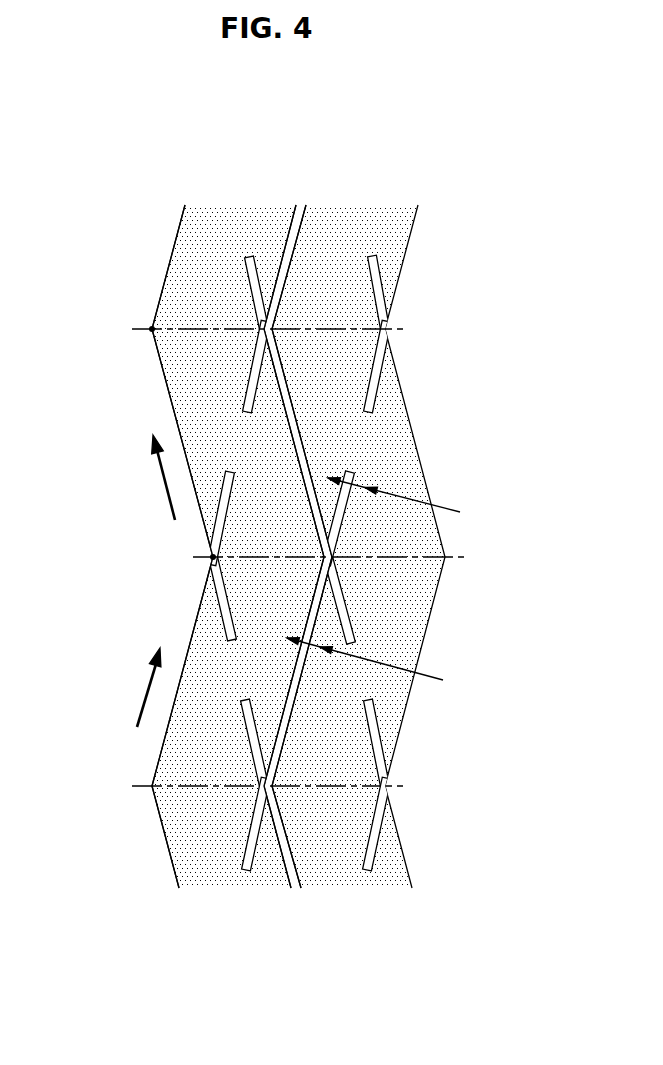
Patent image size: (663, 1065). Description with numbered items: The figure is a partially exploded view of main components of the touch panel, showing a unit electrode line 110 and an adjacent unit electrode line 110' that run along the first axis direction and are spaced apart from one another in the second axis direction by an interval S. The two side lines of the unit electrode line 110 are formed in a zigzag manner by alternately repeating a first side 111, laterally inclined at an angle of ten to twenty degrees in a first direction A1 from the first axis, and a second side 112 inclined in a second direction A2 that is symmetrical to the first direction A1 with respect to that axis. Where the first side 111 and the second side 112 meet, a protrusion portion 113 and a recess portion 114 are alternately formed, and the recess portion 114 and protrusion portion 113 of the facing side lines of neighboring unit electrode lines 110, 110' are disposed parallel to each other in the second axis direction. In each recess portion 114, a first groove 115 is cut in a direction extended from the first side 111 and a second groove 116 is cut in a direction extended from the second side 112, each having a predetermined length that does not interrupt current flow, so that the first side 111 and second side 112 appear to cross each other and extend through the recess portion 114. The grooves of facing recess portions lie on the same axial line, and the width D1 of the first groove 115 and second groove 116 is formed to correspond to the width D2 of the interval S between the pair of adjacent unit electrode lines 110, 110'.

The unit electrode line 110 is at (268, 510).
The adjacent unit electrode line 110' is at (358, 510).
The first side 111 is at (183, 220).
The second side 112 is at (166, 361).
The protrusion portion 113 is at (150, 329).
The recess portion 114 is at (213, 557).
The first groove 115 is at (247, 403).
The second groove 116 is at (250, 272).
The interval S is at (295, 686).
The width of groove D1 is at (411, 503).
The width of interval D2 is at (380, 665).
The first direction A1 is at (137, 687).
The second direction A2 is at (151, 477).